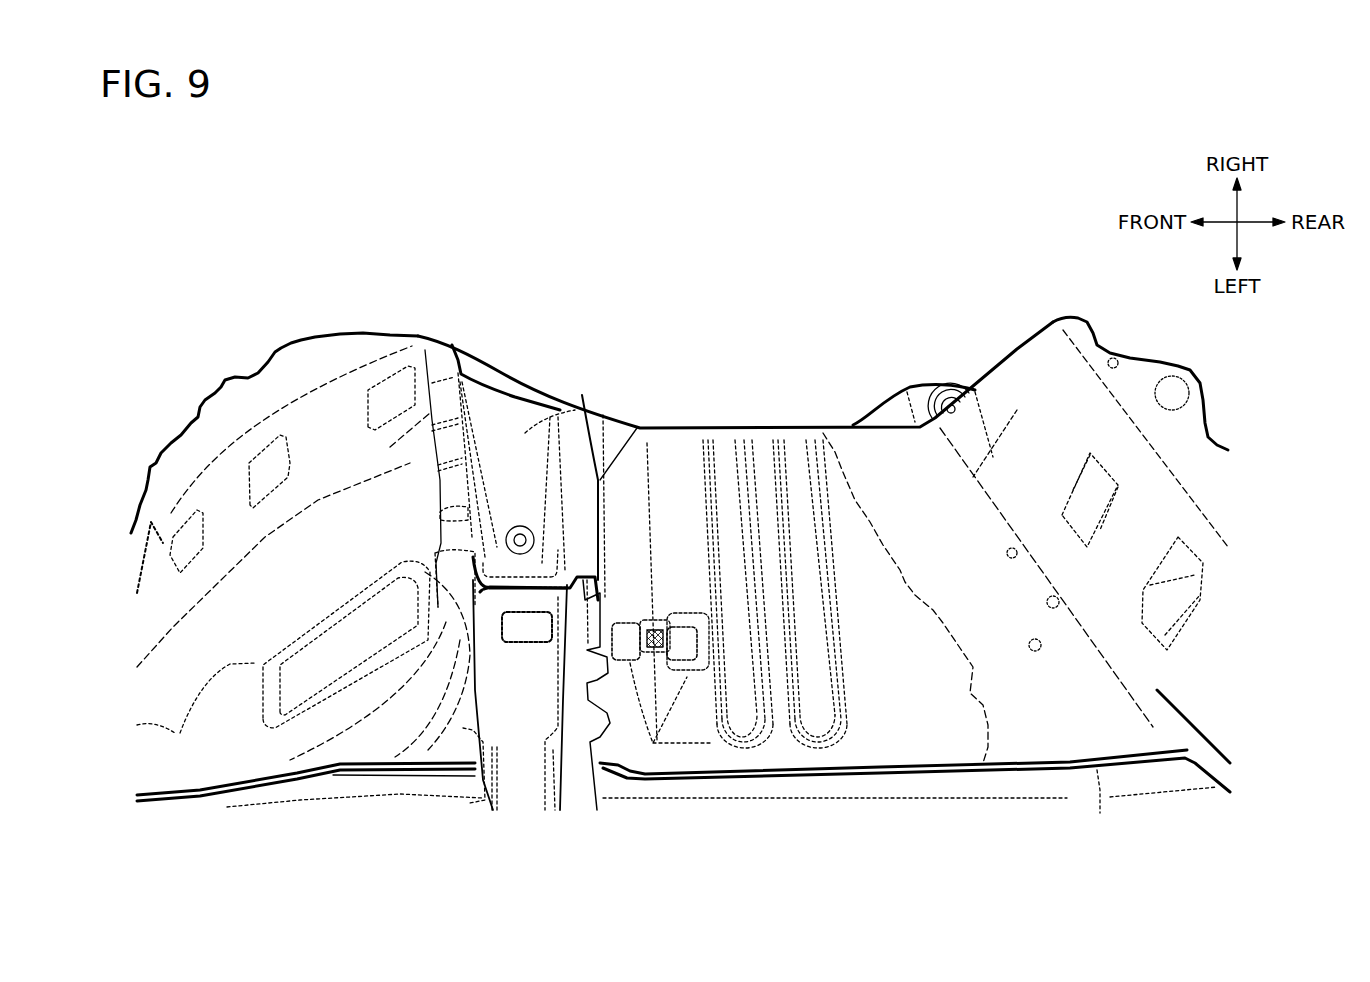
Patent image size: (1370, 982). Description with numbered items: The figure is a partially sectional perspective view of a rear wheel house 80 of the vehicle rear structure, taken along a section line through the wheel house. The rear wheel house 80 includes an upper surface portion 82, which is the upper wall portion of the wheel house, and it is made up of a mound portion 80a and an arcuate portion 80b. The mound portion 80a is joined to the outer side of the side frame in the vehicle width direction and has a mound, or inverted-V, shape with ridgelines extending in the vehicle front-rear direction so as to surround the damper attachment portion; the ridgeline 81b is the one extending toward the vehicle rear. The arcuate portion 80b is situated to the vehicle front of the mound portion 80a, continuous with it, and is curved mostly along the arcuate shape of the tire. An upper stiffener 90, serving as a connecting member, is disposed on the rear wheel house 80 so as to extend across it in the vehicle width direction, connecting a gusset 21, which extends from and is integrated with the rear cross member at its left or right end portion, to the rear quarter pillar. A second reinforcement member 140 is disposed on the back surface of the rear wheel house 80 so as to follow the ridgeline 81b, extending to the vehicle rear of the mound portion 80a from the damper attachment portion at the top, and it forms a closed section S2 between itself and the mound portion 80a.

The upper surface portion 82 is at (420, 336).
The rear wheel house 80 is at (643, 277).
The mound portion 80a is at (760, 455).
The arcuate portion 80b is at (445, 385).
The upper stiffener 90 is at (578, 393).
The gusset 21 is at (503, 703).
The second reinforcement member 140 is at (925, 382).
The closed section S2 is at (897, 410).
The ridgeline 81b is at (1163, 740).